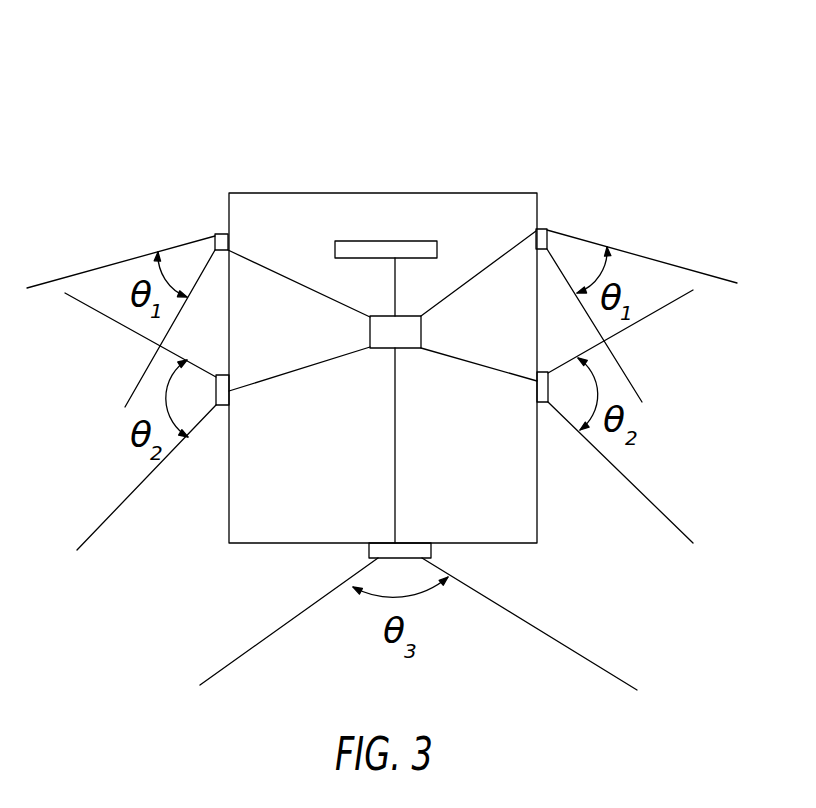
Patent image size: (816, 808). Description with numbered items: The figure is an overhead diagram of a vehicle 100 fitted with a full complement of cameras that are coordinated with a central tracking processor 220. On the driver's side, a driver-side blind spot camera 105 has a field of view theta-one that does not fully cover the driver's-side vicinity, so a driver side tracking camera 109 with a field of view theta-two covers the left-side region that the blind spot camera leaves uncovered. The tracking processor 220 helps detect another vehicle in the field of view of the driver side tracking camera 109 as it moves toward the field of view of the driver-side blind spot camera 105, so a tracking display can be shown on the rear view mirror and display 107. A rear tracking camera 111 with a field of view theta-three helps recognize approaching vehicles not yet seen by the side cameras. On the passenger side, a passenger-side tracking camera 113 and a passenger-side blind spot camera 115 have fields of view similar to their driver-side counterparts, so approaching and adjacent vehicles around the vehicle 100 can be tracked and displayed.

The vehicle 100 is at (171, 97).
The driver-side blind spot camera 105 is at (215, 236).
The rear view mirror and display 107 is at (378, 241).
The driver side tracking camera 109 is at (230, 400).
The rear tracking camera 111 is at (400, 553).
The passenger-side tracking camera 113 is at (537, 386).
The passenger-side blind spot camera 115 is at (544, 228).
The tracking processor 220 is at (388, 316).